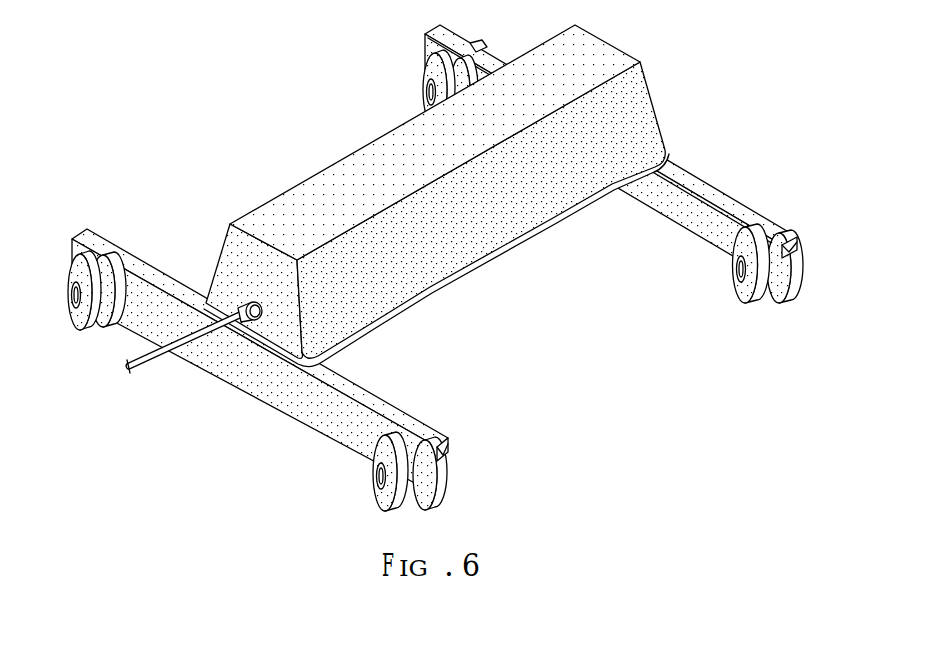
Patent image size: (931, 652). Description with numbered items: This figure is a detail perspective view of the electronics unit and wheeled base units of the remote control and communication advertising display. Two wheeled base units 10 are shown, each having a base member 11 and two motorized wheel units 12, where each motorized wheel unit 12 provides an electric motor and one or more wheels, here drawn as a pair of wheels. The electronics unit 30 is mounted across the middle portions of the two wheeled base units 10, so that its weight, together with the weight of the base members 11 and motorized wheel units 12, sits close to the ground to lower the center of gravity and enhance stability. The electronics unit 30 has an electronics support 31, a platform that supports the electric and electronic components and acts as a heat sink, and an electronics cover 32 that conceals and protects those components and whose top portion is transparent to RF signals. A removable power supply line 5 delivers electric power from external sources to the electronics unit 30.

The removable power supply line 5 is at (166, 363).
The wheeled base unit 10 is at (435, 279).
The base member 11 is at (672, 217).
The motorized wheel unit 12 is at (424, 76).
The electronics unit 30 is at (413, 196).
The electronics support 31 is at (373, 330).
The electronics cover 32 is at (289, 193).